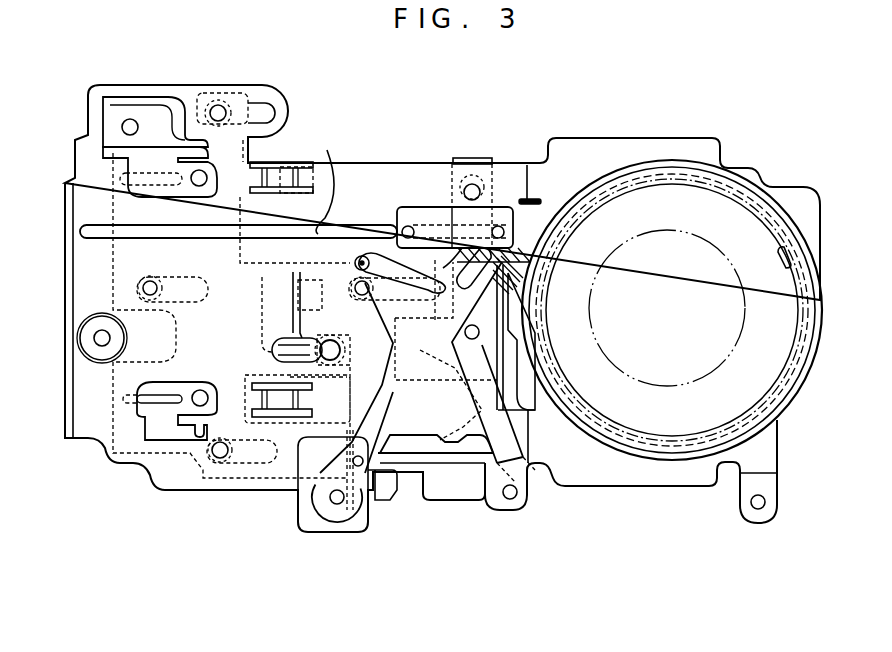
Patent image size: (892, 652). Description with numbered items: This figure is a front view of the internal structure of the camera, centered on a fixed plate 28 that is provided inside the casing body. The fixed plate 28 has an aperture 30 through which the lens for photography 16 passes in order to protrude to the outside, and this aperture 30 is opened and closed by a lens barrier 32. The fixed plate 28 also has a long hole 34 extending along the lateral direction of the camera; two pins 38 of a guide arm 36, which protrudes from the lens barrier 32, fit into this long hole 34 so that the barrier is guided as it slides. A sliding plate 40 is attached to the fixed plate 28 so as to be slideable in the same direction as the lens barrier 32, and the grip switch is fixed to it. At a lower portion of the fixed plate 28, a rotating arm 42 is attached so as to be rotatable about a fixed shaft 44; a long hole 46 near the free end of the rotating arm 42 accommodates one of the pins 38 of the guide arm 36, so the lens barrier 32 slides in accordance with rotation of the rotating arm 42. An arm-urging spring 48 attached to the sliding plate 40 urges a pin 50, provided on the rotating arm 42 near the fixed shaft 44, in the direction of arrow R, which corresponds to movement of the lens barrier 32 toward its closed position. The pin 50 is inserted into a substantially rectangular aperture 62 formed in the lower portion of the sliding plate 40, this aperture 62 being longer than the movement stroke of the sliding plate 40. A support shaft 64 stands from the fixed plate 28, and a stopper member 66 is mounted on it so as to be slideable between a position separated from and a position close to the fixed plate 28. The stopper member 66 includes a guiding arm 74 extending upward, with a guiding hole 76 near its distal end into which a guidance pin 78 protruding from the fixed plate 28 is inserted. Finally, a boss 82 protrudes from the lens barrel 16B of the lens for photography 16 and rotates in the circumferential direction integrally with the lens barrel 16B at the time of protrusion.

The lens for photography 16 is at (664, 170).
The lens barrel 16B is at (608, 437).
The fixed plate 28 is at (352, 164).
The aperture 30 is at (786, 253).
The lens barrier 32 is at (622, 163).
The long hole 34 is at (327, 163).
The guide arm 36 is at (427, 207).
The pins 38 is at (406, 228).
The sliding plate 40 is at (110, 183).
The rotating arm 42 is at (392, 443).
The fixed shaft 44 is at (337, 504).
The long hole 46 is at (497, 258).
The arm-urging spring 48 is at (375, 500).
The pin 50 is at (363, 458).
The substantially rectangular aperture 62 is at (305, 458).
The support shaft 64 is at (505, 360).
The stopper member 66 is at (455, 180).
The guiding arm 74 is at (480, 157).
The guiding hole 76 is at (470, 173).
The guidance pin 78 is at (480, 191).
The boss 82 is at (517, 302).
The direction of arrow R is at (381, 365).